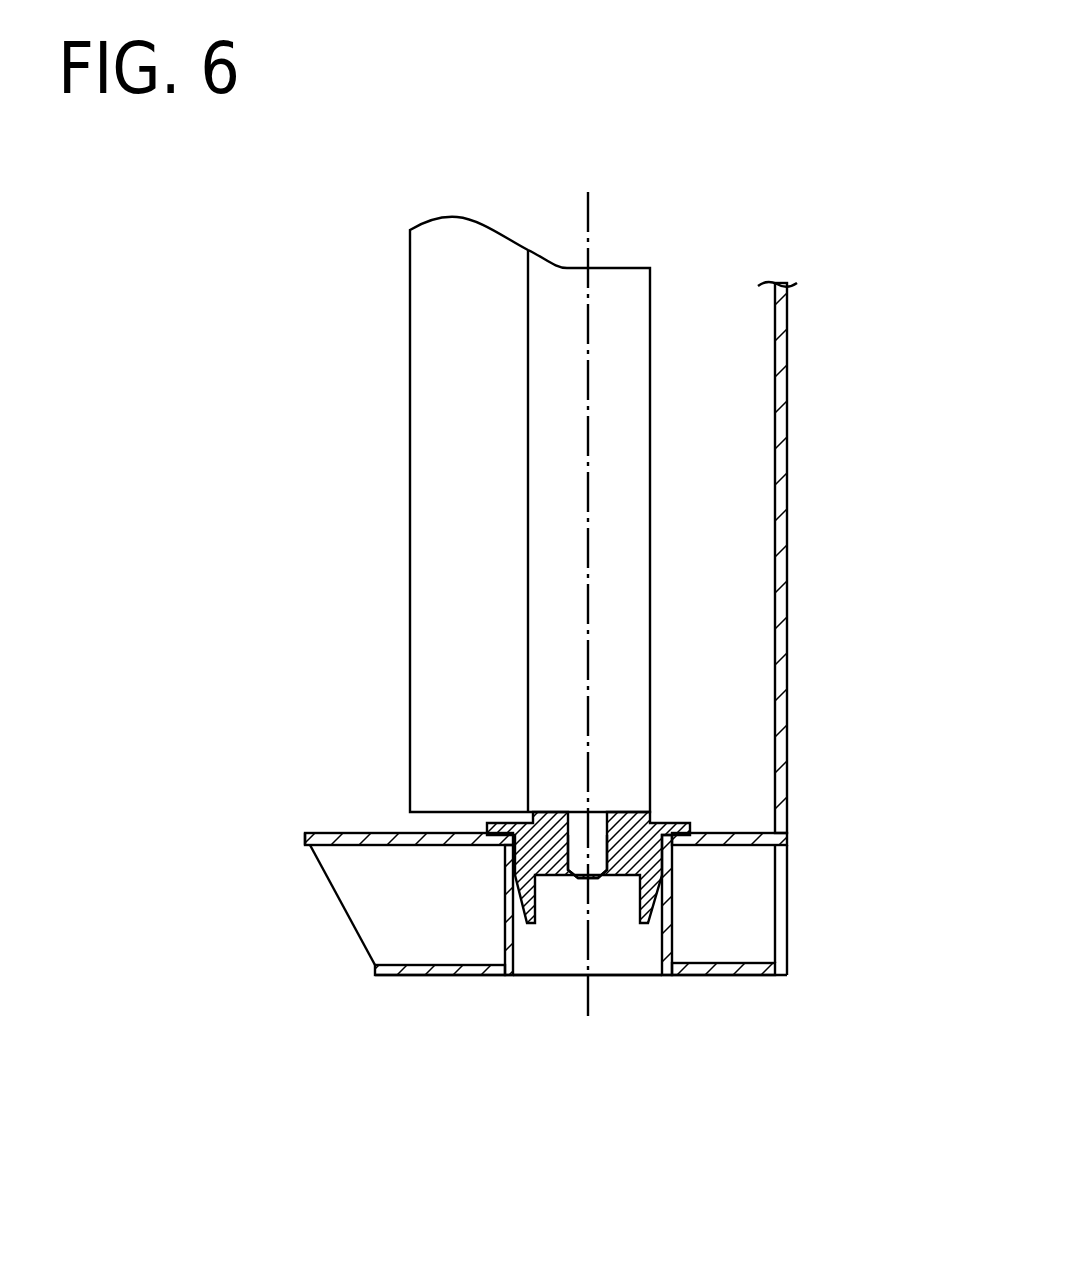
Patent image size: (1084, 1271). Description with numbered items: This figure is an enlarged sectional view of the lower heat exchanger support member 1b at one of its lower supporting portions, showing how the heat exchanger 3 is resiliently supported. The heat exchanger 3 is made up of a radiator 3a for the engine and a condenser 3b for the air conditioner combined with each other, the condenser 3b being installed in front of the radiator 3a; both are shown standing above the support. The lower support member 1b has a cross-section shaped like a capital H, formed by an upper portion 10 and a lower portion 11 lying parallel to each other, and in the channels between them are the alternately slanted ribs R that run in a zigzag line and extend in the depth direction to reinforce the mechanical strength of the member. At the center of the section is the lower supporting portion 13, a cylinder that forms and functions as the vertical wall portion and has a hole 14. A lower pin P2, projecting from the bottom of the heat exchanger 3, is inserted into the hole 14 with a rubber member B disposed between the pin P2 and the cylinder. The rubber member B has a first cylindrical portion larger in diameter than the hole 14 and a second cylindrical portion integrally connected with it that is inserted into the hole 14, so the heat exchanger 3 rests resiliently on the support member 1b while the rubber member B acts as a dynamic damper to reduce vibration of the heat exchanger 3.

The heat exchanger 3 is at (451, 514).
The radiator 3a is at (475, 568).
The condenser 3b is at (557, 480).
The upper portion 10 is at (334, 822).
The lower portion 11 is at (397, 985).
The lower supporting portion 13 is at (492, 889).
The hole 14 is at (517, 937).
The lower support member 1b is at (717, 985).
The rib R is at (350, 882).
The rubber member B is at (670, 810).
The lower pin P2 is at (598, 850).